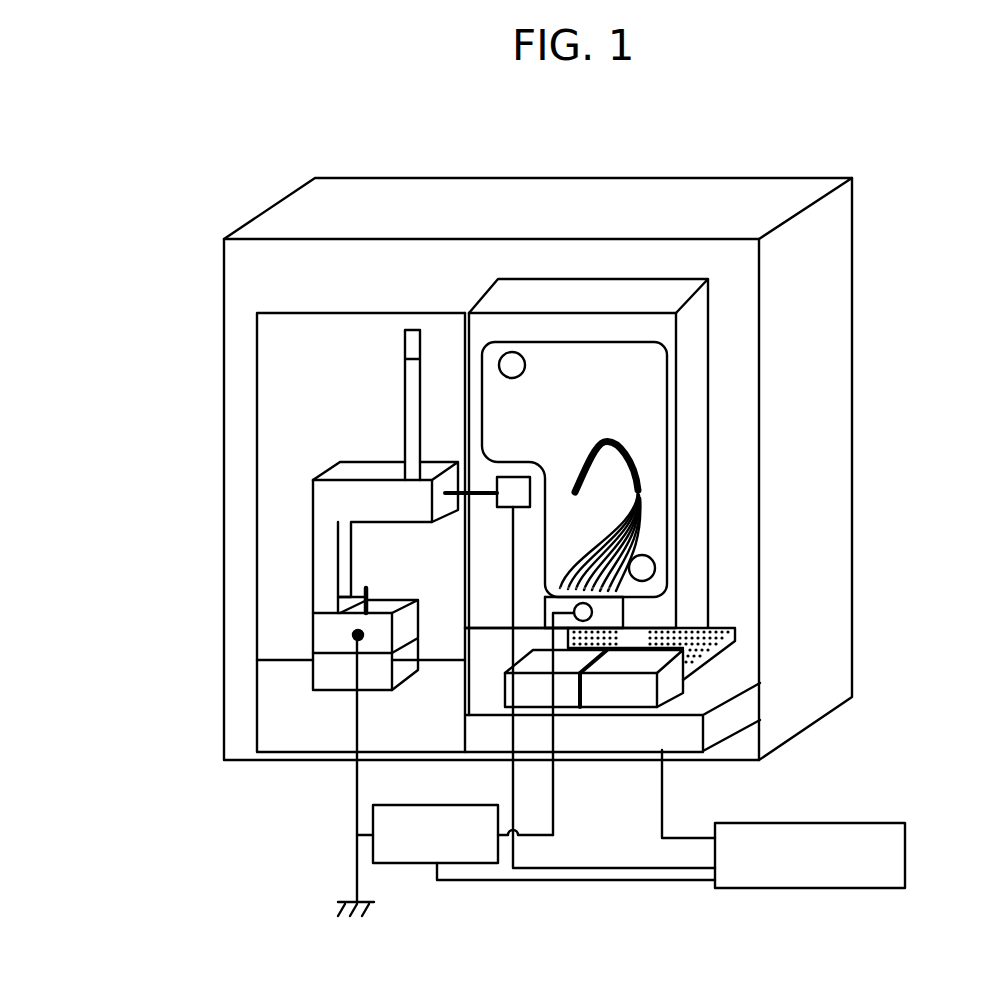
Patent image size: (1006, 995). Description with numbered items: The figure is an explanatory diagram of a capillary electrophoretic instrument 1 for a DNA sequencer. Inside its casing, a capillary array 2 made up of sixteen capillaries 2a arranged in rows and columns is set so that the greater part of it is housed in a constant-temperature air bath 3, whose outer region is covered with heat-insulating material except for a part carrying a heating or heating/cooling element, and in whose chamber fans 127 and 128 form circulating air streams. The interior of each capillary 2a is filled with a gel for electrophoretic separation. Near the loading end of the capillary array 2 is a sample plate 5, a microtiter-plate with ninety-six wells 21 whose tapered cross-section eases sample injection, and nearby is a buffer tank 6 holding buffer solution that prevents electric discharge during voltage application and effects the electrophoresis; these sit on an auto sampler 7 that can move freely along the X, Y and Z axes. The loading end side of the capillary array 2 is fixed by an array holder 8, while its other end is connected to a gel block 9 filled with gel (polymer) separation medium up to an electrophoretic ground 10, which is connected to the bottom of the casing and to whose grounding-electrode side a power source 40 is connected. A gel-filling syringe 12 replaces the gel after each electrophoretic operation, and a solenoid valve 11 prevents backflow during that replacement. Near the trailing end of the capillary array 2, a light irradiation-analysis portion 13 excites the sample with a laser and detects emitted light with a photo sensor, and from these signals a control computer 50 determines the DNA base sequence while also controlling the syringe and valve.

The capillary electrophoretic instrument 1 is at (731, 202).
The capillary array 2 is at (623, 452).
The capillary 2a is at (640, 522).
The constant-temperature air bath 3 is at (577, 373).
The sample plate 5 is at (740, 629).
The buffer tank 6 is at (633, 687).
The auto sampler 7 is at (660, 732).
The array holder 8 is at (613, 613).
The gel block 9 is at (330, 493).
The electrophoretic ground 10 is at (353, 635).
The solenoid valve 11 is at (367, 590).
The gel-filling syringe 12 is at (404, 385).
The light irradiation-analysis portion 13 is at (512, 497).
The well 21 is at (736, 645).
The power source 40 is at (400, 863).
The control computer 50 is at (905, 855).
The fan 127 is at (655, 557).
The fan 128 is at (513, 352).